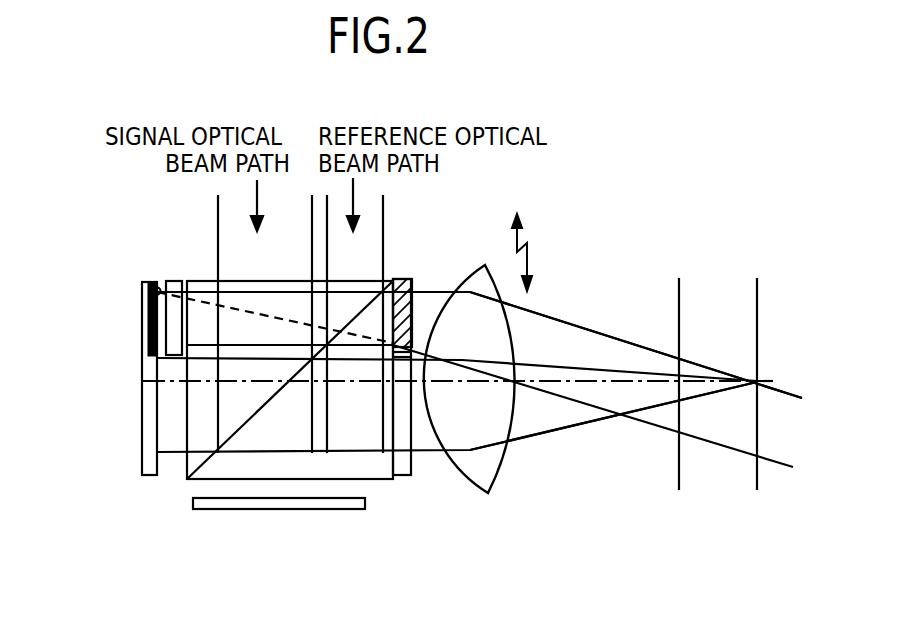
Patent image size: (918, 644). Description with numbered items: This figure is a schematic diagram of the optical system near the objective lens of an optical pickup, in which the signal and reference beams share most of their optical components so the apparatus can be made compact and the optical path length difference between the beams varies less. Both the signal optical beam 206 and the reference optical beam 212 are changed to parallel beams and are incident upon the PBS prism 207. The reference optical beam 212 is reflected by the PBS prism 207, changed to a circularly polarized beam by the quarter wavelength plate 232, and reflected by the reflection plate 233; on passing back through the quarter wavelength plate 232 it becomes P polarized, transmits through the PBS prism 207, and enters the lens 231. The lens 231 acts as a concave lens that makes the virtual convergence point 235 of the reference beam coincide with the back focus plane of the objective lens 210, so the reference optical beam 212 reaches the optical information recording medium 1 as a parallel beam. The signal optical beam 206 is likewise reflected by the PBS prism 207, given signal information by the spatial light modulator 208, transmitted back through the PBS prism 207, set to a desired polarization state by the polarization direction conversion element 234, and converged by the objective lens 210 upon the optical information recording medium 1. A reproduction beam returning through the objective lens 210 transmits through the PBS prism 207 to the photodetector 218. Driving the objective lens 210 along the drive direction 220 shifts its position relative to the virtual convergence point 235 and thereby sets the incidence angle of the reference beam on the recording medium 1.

The optical information recording medium 1 is at (713, 282).
The signal optical beam 206 is at (560, 420).
The PBS prism 207 is at (187, 460).
The spatial light modulator 208 is at (143, 452).
The objective lens 210 is at (478, 495).
The reference optical beam 212 is at (583, 335).
The photodetector 218 is at (288, 510).
The drive direction 220 is at (530, 250).
The lens 231 is at (402, 277).
The quarter wavelength plate 232 is at (172, 280).
The reflection plate 233 is at (146, 332).
The polarization direction conversion element 234 is at (405, 477).
The virtual convergence point 235 is at (155, 289).